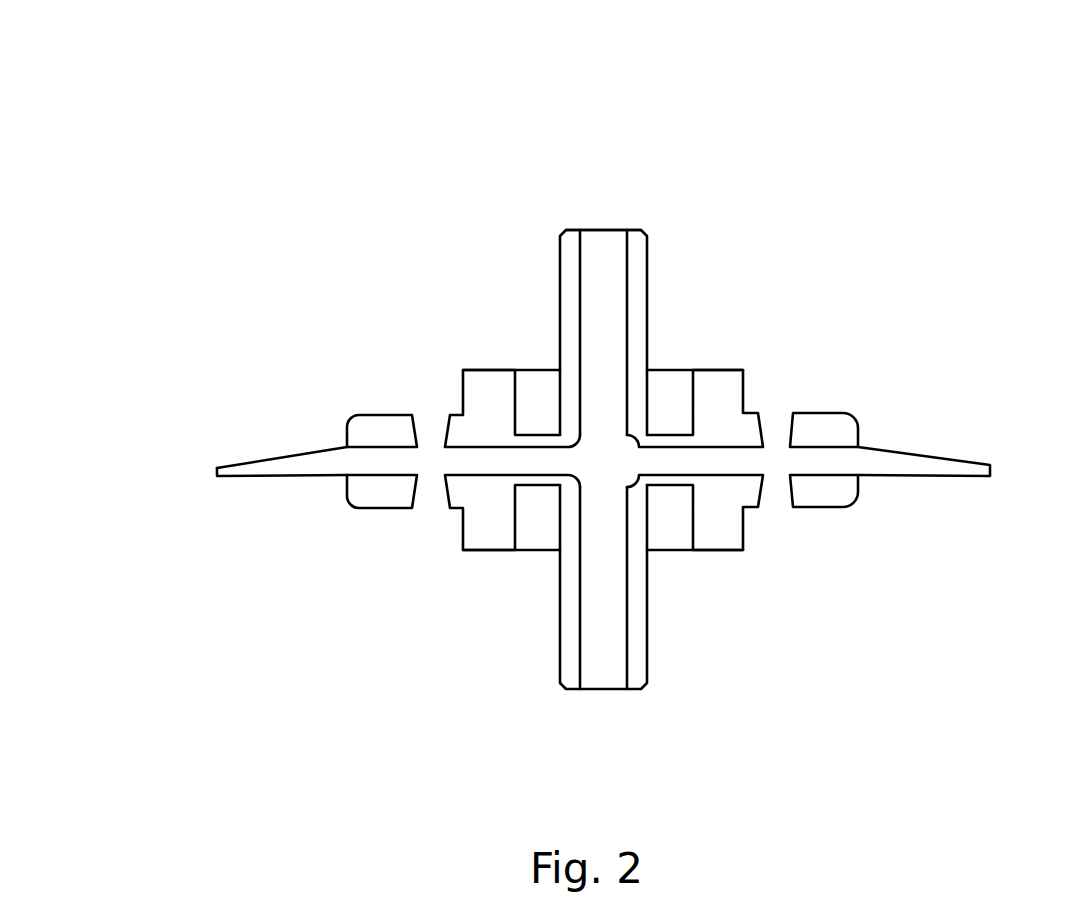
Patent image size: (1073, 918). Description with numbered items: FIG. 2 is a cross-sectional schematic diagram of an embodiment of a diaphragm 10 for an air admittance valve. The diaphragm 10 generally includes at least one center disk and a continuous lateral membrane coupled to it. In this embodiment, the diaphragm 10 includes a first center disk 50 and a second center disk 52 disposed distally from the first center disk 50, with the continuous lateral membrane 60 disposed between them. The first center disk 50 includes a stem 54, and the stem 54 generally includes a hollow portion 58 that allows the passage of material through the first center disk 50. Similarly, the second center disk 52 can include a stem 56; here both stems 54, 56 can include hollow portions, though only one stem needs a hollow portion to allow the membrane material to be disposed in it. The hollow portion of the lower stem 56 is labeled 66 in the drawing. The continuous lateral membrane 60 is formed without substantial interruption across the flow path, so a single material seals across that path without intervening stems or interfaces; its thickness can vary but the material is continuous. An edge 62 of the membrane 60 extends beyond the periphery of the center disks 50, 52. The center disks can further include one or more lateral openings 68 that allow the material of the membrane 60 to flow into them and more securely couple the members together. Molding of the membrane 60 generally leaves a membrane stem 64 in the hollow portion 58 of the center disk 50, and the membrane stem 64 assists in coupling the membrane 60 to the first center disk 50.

The diaphragm 10 is at (505, 313).
The first center disk 50 is at (846, 402).
The second center disk 52 is at (838, 522).
The stem 54 is at (663, 265).
The stem 56 is at (666, 656).
The hollow portion 58 is at (600, 253).
The continuous lateral membrane 60 is at (285, 433).
The edge 62 is at (213, 495).
The membrane stem 64 is at (624, 212).
The lower channel 66 is at (603, 664).
The lateral openings 68 is at (425, 522).